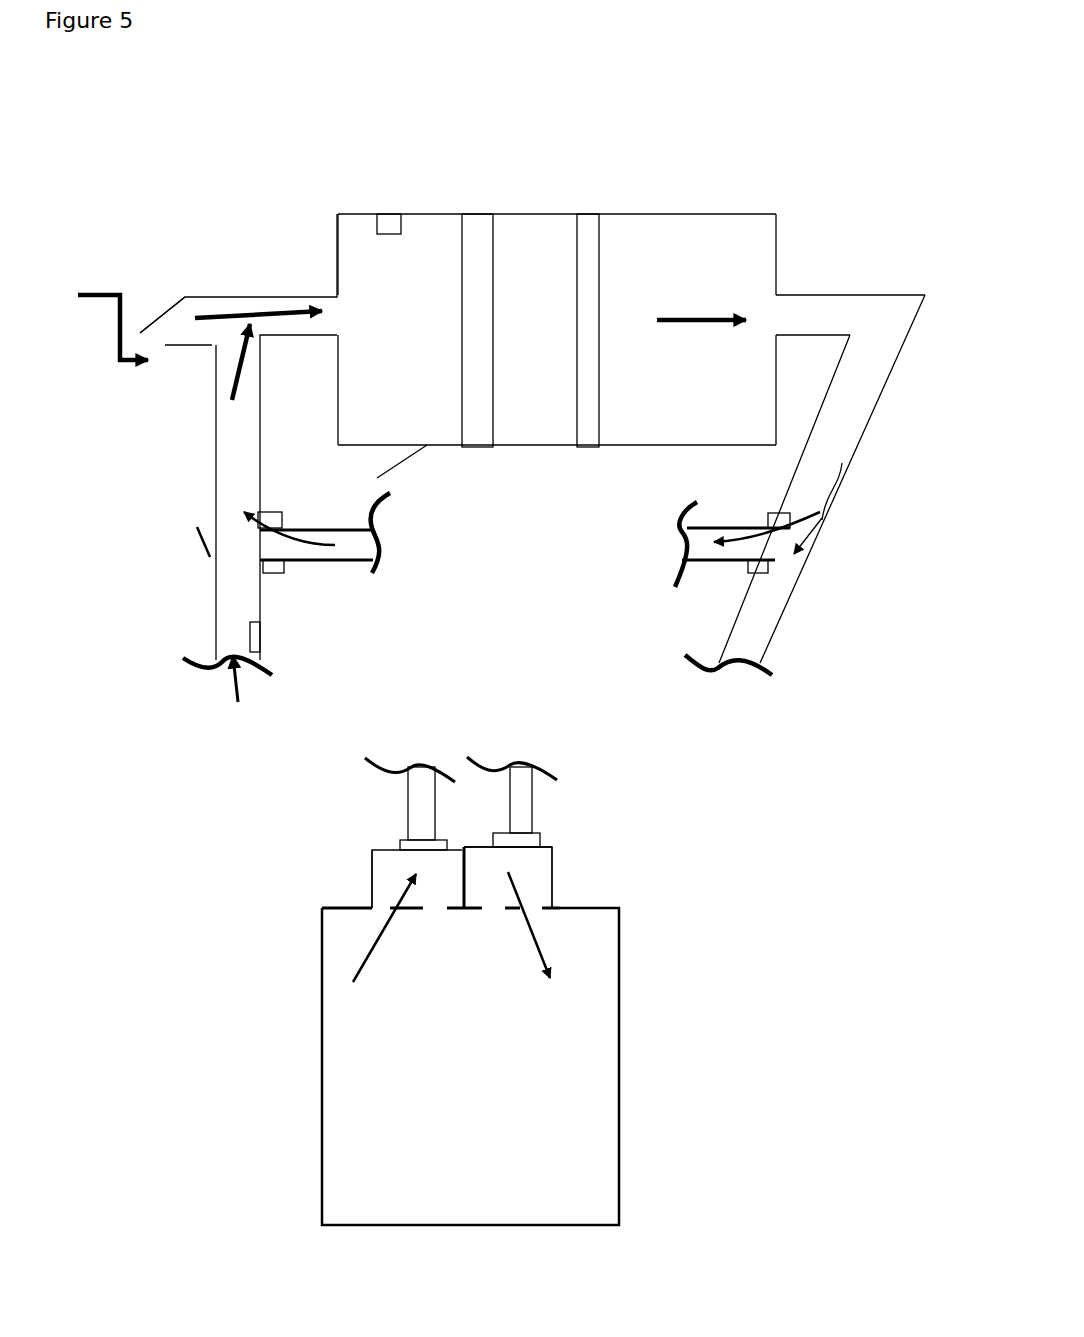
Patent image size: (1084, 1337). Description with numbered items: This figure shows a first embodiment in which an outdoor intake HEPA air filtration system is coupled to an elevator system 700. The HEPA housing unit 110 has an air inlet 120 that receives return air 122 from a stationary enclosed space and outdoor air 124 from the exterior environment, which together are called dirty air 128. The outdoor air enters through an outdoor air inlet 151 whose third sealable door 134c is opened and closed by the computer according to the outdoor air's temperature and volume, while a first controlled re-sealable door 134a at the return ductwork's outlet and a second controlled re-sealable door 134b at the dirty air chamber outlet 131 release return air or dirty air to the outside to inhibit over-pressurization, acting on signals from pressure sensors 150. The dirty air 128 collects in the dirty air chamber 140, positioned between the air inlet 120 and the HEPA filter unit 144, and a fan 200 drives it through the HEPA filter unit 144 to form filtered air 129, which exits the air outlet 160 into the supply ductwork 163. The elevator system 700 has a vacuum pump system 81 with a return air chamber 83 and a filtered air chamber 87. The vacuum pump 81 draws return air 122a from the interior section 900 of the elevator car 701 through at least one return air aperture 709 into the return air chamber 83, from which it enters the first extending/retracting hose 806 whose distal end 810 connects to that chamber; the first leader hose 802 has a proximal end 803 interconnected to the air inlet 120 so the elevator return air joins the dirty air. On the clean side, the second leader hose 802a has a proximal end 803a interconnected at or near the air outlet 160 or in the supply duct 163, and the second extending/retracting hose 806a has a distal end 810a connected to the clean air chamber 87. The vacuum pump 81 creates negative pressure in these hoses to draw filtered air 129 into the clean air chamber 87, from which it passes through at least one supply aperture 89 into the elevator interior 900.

The HEPA housing unit 110 is at (663, 210).
The air inlet 120 is at (228, 310).
The return air 122 is at (222, 681).
The return air 122a is at (298, 548).
The outdoor air 124 is at (105, 290).
The dirty air 128 is at (304, 320).
The filtered air 129 is at (705, 310).
The dirty air chamber outlet 131 is at (375, 465).
The first controlled re-sealable door 134a is at (192, 510).
The second controlled re-sealable door 134b is at (414, 465).
The third sealable door 134c is at (165, 310).
The dirty air chamber 140 is at (404, 270).
The HEPA filter unit 144 is at (580, 285).
The pressure sensors 150 is at (387, 226).
The outdoor air inlet 151 is at (167, 350).
The air outlet 160 is at (784, 290).
The supply ductwork 163 is at (889, 292).
The fan 200 is at (490, 302).
The elevator system 700 is at (213, 806).
The elevator car 701 is at (630, 1040).
The return air aperture 709 is at (387, 910).
The first leader hose 802 is at (355, 564).
The second leader hose 802a is at (705, 561).
The proximal end of first leader hose 803 is at (273, 579).
The proximal end of second leader hose 803a is at (769, 568).
The first extending/retracting hose 806 is at (418, 808).
The second extending/retracting hose 806a is at (545, 789).
The distal end of first extending/retracting hose 810 is at (400, 837).
The distal end of second extending/retracting hose 810a is at (547, 831).
The vacuum pump system 81 is at (556, 870).
The return air chamber 83 is at (367, 875).
The filtered air chamber 87 is at (556, 847).
The supply aperture 89 is at (546, 913).
The interior section 900 is at (570, 1147).